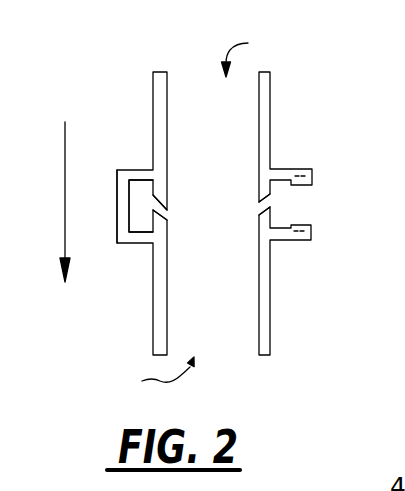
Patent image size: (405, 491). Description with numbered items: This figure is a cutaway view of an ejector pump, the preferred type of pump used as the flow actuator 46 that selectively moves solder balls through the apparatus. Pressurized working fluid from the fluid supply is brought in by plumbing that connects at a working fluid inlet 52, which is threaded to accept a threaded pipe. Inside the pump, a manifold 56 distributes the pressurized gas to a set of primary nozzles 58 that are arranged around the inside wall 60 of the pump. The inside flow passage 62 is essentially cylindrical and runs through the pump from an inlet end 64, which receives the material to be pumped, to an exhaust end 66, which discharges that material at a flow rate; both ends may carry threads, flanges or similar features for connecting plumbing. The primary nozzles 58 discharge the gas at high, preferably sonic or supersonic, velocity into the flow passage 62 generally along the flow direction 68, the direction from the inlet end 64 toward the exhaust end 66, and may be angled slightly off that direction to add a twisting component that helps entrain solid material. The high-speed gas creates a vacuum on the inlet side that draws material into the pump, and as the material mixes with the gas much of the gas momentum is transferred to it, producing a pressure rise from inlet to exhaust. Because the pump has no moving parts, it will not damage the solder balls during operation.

The flow actuator 46 is at (295, 201).
The working fluid inlet 52 is at (311, 226).
The manifold 56 is at (141, 180).
The primary nozzles 58 is at (258, 213).
The inside wall 60 is at (167, 86).
The inside flow passage 62 is at (218, 157).
The inlet end 64 is at (251, 50).
The exhaust end 66 is at (152, 375).
The flow direction 68 is at (64, 172).